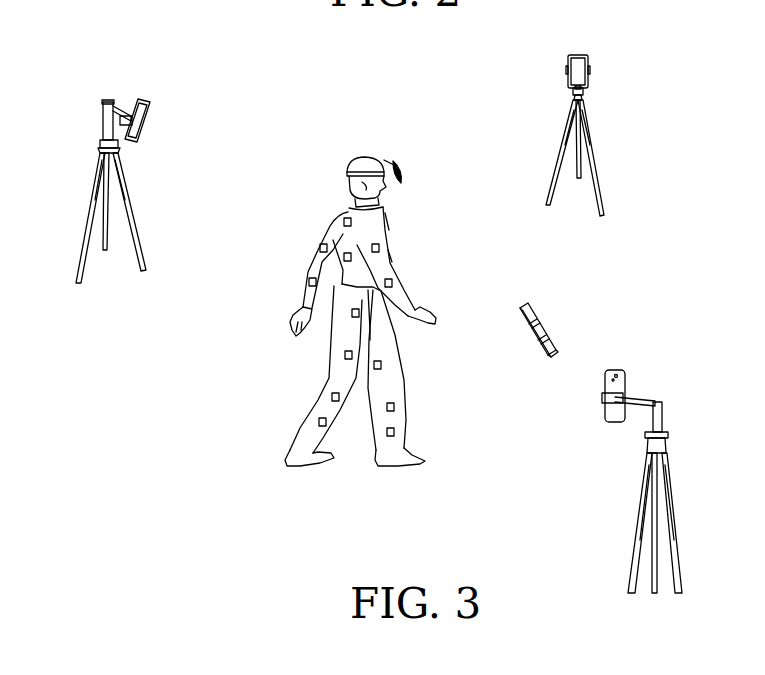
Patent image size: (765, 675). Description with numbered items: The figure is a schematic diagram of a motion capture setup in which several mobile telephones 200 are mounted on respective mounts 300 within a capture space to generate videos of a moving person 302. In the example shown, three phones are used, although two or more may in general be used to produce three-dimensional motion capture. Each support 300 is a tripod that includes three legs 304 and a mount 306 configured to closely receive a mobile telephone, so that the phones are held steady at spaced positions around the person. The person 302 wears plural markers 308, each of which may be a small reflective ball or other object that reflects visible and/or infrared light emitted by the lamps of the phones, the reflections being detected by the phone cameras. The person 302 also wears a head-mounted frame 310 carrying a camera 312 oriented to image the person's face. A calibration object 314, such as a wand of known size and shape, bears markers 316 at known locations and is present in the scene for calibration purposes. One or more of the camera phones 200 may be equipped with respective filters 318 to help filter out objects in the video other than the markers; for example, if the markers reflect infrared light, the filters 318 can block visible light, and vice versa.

The mobile telephone 200 is at (578, 55).
The mount 300 is at (605, 162).
The moving person 302 is at (327, 227).
The legs 304 is at (555, 150).
The mount 306 is at (588, 68).
The markers 308 is at (308, 282).
The head-mounted frame 310 is at (367, 162).
The camera 312 is at (403, 172).
The calibration object 314 is at (522, 305).
The markers 316 is at (543, 337).
The filters 318 is at (140, 96).